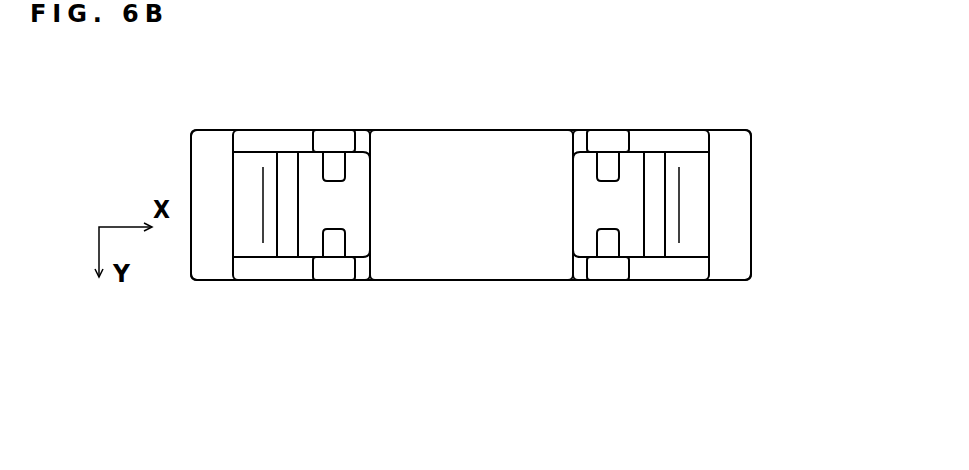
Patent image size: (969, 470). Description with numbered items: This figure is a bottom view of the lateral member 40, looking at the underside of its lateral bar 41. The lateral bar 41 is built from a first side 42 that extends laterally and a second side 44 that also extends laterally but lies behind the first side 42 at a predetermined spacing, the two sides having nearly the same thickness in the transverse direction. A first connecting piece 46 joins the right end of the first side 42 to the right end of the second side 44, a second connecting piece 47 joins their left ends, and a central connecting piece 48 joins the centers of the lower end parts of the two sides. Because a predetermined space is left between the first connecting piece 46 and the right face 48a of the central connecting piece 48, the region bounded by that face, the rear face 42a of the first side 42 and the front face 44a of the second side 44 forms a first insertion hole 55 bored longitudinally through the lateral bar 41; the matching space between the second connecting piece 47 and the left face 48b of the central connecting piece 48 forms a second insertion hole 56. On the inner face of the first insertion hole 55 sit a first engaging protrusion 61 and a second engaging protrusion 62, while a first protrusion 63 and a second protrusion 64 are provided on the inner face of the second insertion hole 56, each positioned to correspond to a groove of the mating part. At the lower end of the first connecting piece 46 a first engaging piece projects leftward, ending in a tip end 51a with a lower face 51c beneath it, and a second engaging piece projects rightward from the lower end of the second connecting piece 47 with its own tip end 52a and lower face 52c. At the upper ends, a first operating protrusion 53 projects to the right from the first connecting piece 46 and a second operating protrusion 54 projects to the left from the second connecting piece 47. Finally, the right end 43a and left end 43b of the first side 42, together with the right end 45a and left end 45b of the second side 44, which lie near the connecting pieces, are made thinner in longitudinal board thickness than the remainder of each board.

The lateral member 40 is at (762, 113).
The lateral bar 41 is at (425, 127).
The first side 42 is at (362, 135).
The rear face of the first side 42a is at (580, 155).
The right end of the first side 43a is at (663, 137).
The left end of the first side 43b is at (277, 136).
The second side 44 is at (365, 272).
The front face of the second side 44a is at (570, 254).
The right end of the second side 45a is at (648, 272).
The left end of the second side 45b is at (292, 272).
The first connecting piece 46 is at (726, 148).
The second connecting piece 47 is at (244, 167).
The central connecting piece 48 is at (485, 141).
The right face of the central connecting piece 48a is at (578, 208).
The left face of the central connecting piece 48b is at (366, 205).
The tip end of the first engaging piece 51a is at (640, 233).
The lower face of the first engaging piece 51c is at (660, 236).
The tip end of the second engaging piece 52a is at (305, 200).
The lower face of the second engaging piece 52c is at (287, 215).
The first operating protrusion 53 is at (743, 167).
The second operating protrusion 54 is at (200, 152).
The first insertion hole 55 is at (577, 178).
The second insertion hole 56 is at (371, 176).
The first engaging protrusion 61 is at (615, 171).
The second engaging protrusion 62 is at (586, 240).
The first protrusion 63 is at (326, 168).
The second protrusion 64 is at (327, 236).